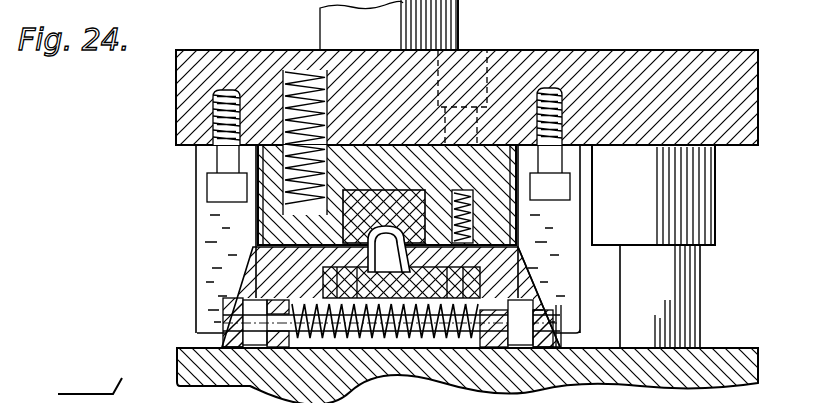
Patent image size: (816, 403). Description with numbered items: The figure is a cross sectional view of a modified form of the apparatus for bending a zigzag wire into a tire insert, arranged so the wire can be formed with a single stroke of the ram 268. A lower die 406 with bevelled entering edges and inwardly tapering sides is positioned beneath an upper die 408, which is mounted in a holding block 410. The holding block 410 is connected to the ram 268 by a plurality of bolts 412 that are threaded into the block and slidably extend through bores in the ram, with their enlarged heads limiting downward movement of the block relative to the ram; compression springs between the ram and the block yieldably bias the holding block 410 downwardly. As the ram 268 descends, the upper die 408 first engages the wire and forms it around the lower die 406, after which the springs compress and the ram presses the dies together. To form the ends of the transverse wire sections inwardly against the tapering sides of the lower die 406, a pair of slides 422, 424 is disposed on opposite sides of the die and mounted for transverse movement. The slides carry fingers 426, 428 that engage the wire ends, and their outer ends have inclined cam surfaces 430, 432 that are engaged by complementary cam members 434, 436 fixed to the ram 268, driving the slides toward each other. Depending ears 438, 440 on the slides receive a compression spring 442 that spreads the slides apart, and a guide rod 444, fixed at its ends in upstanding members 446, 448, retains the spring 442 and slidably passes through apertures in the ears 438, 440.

The ram 268 is at (617, 60).
The bolts 412 is at (480, 50).
The cam member 434 is at (198, 204).
The cam member 436 is at (538, 213).
The slide 424 is at (583, 295).
The finger 428 is at (513, 260).
The holding block 410 is at (273, 222).
The lower die 406 is at (378, 222).
The upper die 408 is at (404, 225).
The inclined cam surface 430 is at (250, 262).
The finger 426 is at (330, 262).
The slide 422 is at (300, 286).
The upstanding member 446 is at (262, 338).
The compression spring 442 is at (366, 338).
The depending ear 440 is at (497, 343).
The guide rod 444 is at (555, 350).
The upstanding member 448 is at (578, 360).
The inclined cam surface 432 is at (550, 287).
The depending ear 438 is at (270, 368).